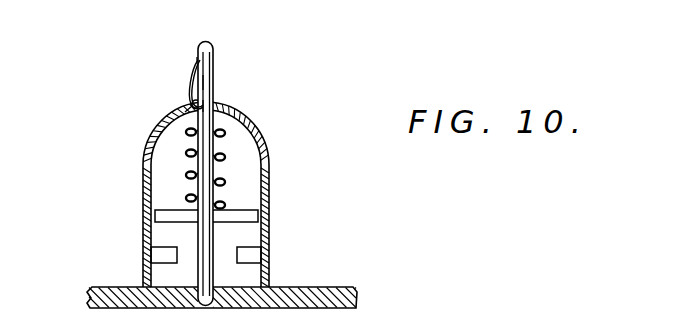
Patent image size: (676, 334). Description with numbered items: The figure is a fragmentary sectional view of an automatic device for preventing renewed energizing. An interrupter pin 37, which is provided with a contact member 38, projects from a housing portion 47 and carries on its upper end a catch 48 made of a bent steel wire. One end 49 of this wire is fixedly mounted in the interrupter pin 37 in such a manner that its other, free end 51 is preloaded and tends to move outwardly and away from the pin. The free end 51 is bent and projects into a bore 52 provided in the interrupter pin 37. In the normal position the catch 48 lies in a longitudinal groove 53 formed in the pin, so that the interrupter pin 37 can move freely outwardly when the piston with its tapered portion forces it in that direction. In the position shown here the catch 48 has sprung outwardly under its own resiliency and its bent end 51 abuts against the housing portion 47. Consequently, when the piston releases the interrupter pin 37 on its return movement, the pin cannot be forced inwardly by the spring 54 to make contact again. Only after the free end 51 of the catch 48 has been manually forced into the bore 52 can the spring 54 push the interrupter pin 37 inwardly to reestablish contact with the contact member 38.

The interrupter pin 37 is at (213, 45).
The contact member 38 is at (162, 213).
The housing portion 47 is at (262, 125).
The catch 48 is at (192, 96).
The end of catch 49 is at (197, 57).
The free end of catch 51 is at (190, 112).
The bore 52 is at (216, 108).
The longitudinal groove 53 is at (216, 83).
The spring 54 is at (225, 183).